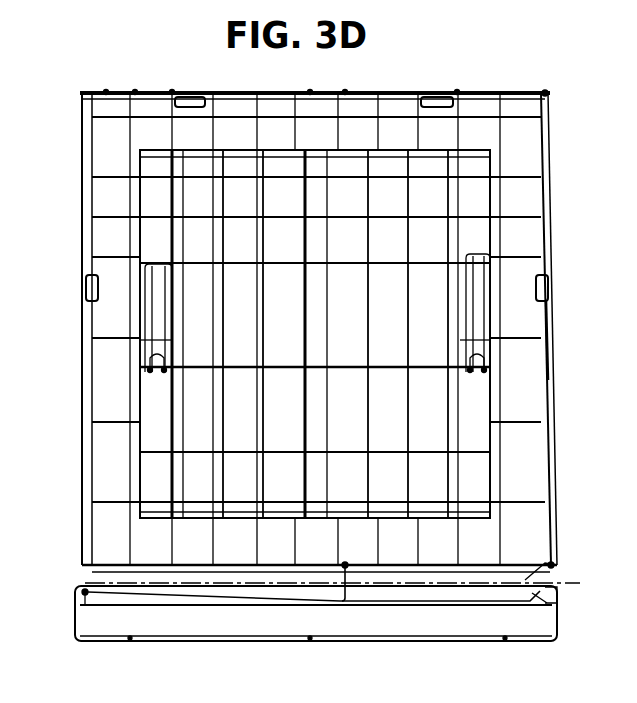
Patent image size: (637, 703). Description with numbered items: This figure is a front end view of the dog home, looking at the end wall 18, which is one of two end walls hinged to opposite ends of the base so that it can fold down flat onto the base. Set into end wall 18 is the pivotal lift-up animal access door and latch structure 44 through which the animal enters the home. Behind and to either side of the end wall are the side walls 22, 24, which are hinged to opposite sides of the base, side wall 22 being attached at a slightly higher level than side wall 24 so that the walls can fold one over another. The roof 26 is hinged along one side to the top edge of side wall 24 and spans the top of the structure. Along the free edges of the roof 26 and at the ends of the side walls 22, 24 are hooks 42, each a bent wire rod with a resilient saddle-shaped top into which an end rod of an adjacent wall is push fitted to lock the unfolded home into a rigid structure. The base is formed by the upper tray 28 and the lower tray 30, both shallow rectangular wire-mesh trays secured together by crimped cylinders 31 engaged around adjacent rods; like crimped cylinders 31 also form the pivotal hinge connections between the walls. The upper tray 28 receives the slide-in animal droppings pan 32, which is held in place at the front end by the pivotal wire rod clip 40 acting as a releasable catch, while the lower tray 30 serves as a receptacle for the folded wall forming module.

The end wall 18 is at (123, 353).
The side wall 22 is at (82, 422).
The side wall 24 is at (552, 355).
The roof 26 is at (355, 93).
The upper tray 28 is at (552, 556).
The lower tray 30 is at (421, 630).
The crimped cylinder 31 is at (545, 93).
The animal droppings pan 32 is at (560, 603).
The pivotal wire rod clip 40 is at (172, 598).
The hook 42 is at (186, 93).
The animal access door and latch structure 44 is at (136, 197).